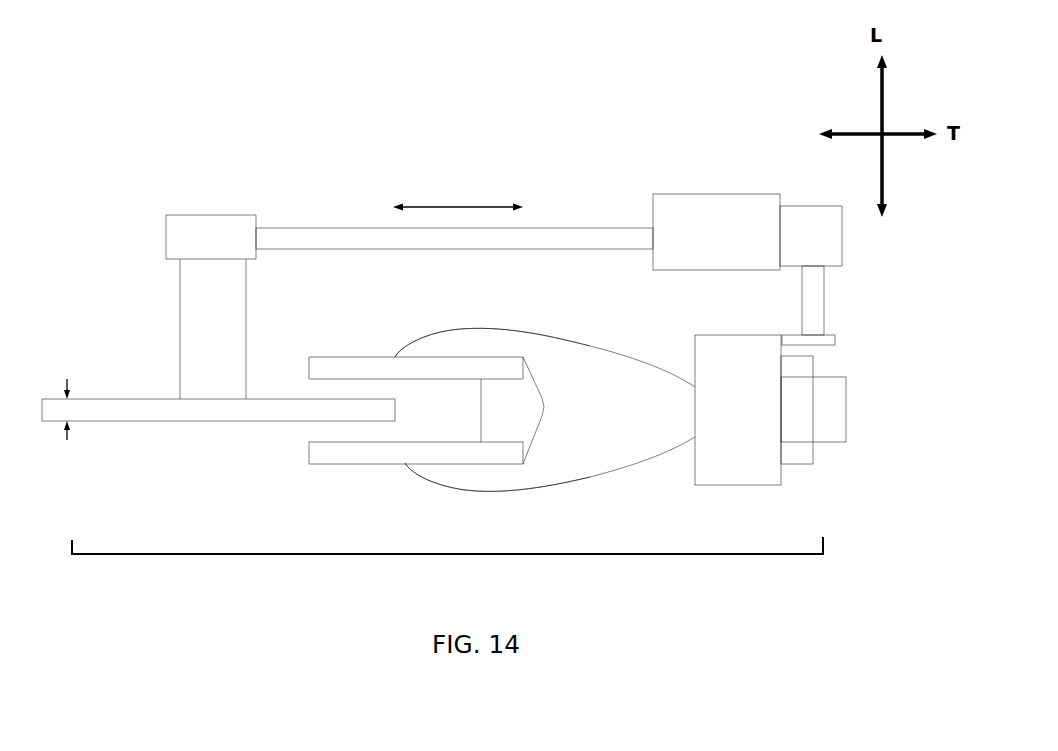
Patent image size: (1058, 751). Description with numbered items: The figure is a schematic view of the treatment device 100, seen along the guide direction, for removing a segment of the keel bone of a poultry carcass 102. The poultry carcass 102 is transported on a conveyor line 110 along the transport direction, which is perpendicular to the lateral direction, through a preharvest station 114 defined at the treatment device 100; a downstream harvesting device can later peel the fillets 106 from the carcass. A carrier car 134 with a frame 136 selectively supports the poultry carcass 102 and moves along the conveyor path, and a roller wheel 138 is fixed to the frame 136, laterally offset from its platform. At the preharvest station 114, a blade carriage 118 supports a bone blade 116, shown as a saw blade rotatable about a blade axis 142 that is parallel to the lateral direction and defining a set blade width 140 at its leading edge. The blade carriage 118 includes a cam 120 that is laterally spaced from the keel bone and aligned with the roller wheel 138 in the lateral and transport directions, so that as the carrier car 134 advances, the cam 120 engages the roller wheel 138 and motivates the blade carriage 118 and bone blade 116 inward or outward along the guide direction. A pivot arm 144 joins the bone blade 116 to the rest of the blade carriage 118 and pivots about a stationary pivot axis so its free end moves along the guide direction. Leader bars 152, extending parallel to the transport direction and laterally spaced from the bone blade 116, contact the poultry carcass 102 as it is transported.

The treatment device 100 is at (219, 152).
The poultry carcass 102 is at (477, 327).
The fillets 106 is at (427, 344).
The conveyor line 110 is at (825, 425).
The preharvest station 114 is at (447, 562).
The bone blade 116 is at (145, 399).
The blade carriage 118 is at (359, 228).
The cam 120 is at (697, 210).
The carrier car 134 is at (813, 480).
The frame 136 is at (757, 459).
The roller wheel 138 is at (799, 206).
The blade width 140 is at (75, 425).
The blade axis 142 is at (217, 421).
The pivot arm 144 is at (180, 249).
The leader bar 152 is at (353, 362).